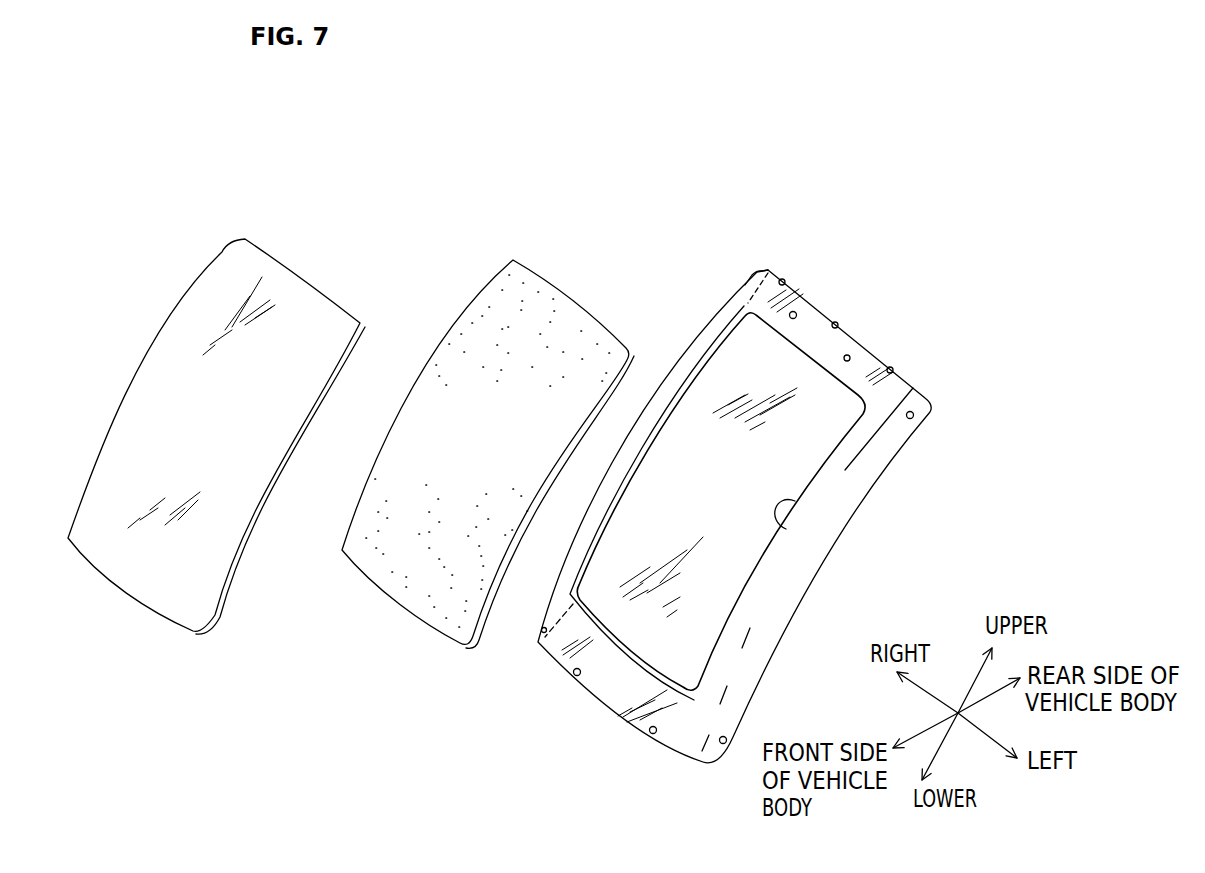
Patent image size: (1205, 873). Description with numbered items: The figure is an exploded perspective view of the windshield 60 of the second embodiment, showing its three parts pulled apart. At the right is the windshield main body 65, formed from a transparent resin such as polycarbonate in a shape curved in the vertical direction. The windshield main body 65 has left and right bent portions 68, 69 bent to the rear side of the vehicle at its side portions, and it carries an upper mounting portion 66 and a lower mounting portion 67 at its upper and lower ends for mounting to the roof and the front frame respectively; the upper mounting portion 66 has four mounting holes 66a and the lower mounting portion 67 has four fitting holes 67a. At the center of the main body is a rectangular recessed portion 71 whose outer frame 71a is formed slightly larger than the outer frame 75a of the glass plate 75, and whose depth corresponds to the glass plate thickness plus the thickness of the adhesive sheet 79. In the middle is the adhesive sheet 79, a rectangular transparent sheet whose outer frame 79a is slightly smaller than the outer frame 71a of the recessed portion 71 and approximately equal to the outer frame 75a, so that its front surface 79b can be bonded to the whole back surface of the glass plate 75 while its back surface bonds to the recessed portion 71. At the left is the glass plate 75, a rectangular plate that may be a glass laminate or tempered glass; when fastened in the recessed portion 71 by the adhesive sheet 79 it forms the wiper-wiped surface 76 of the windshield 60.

The windshield 60 is at (622, 180).
The windshield main body 65 is at (872, 337).
The upper mounting portion 66 is at (873, 363).
The mounting holes 66a is at (793, 312).
The lower mounting portion 67 is at (608, 698).
The fitting holes 67a is at (577, 672).
The left bent portion 68 is at (887, 443).
The right bent portion 69 is at (760, 274).
The recessed portion 71 is at (738, 550).
The outer frame of recessed portion 71a is at (780, 507).
The glass plate 75 is at (163, 323).
The outer frame of glass plate 75a is at (206, 266).
The wiper-wiped surface 76 is at (162, 382).
The adhesive sheet 79 is at (552, 277).
The outer frame of adhesive sheet 79a is at (582, 307).
The front surface of adhesive sheet 79b is at (493, 308).